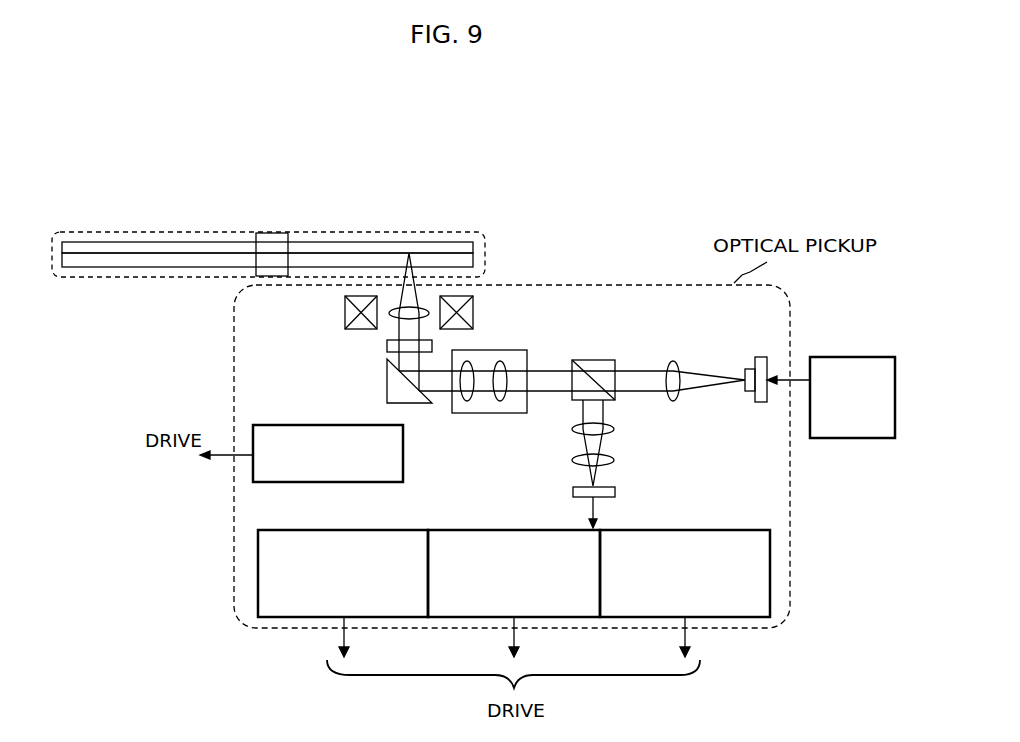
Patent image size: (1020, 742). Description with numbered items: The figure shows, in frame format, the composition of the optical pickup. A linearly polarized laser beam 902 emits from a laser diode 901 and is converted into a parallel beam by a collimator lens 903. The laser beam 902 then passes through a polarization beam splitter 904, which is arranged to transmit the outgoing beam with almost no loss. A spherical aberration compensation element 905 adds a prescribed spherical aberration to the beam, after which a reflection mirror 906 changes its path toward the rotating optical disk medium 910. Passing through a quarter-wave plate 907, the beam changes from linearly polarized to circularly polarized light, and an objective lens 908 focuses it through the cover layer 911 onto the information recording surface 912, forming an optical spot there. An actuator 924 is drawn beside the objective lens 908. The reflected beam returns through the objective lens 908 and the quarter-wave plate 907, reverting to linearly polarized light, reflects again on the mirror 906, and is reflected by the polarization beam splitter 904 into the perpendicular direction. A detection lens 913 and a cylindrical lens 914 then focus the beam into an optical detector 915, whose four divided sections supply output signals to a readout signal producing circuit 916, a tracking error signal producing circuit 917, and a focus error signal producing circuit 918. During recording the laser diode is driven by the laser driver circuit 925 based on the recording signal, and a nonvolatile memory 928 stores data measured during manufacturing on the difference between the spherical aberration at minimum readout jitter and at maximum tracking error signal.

The laser diode 901 is at (768, 356).
The laser beam 902 is at (705, 389).
The collimator lens 903 is at (678, 362).
The polarization beam splitter 904 is at (597, 359).
The spherical aberration compensation element 905 is at (500, 413).
The reflection mirror 906 is at (401, 405).
The quarter-wave plate 907 is at (432, 345).
The objective lens 908 is at (390, 308).
The optical disk medium 910 is at (410, 232).
The cover layer 911 is at (485, 260).
The information recording surface 912 is at (445, 250).
The detection lens 913 is at (617, 432).
The cylindrical lens 914 is at (617, 462).
The optical detector 915 is at (617, 493).
The readout signal producing circuit 916 is at (336, 530).
The tracking error signal producing circuit 917 is at (498, 529).
The focus error signal producing circuit 918 is at (731, 527).
The actuator 924 is at (345, 315).
The laser diode driver 925 is at (838, 357).
The nonvolatile memory 928 is at (343, 425).